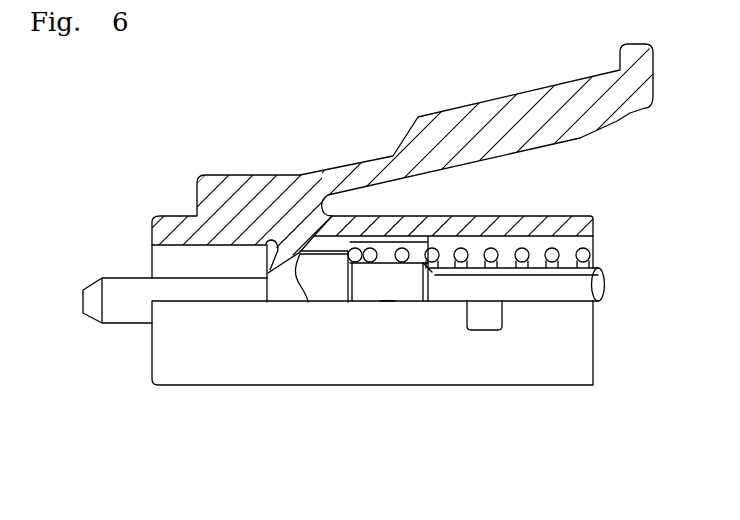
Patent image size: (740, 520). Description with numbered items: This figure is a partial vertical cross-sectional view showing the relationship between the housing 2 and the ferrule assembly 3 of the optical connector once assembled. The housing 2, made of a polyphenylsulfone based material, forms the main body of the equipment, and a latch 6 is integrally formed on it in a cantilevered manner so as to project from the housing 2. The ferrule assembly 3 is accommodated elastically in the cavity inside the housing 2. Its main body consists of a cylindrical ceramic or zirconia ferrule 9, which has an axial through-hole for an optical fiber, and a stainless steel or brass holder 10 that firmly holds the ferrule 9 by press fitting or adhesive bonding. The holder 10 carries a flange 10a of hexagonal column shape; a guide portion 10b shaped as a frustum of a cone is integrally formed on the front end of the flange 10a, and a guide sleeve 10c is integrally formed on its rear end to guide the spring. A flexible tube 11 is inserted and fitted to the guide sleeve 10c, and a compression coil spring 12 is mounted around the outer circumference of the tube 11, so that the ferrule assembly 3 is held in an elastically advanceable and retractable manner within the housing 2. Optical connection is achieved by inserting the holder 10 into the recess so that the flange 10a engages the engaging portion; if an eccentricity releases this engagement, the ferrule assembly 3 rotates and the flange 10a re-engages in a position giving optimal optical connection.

The housing 2 is at (497, 368).
The ferrule assembly 3 is at (386, 303).
The latch 6 is at (550, 107).
The ferrule 9 is at (132, 287).
The holder 10 is at (357, 297).
The flange 10a is at (330, 267).
The guide portion 10b is at (283, 288).
The guide sleeve 10c is at (405, 288).
The flexible tube 11 is at (575, 287).
The compression coil spring 12 is at (553, 255).